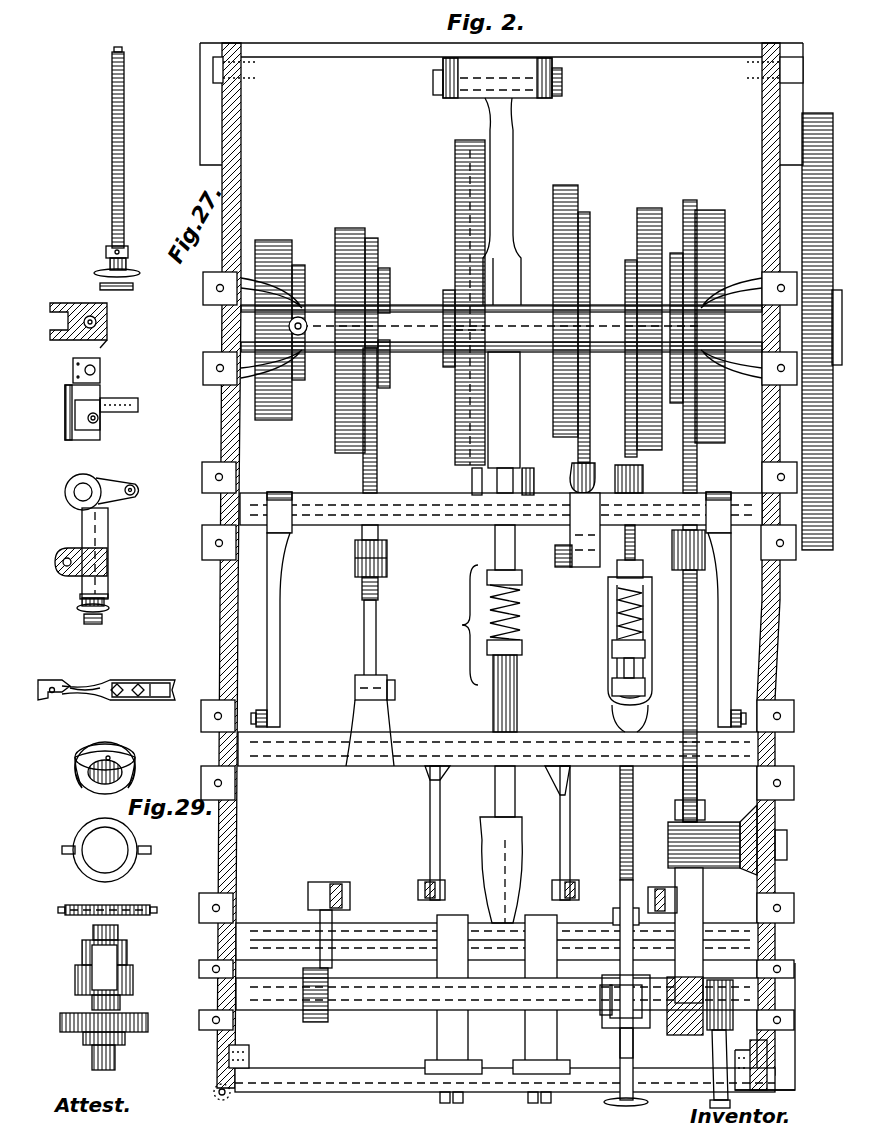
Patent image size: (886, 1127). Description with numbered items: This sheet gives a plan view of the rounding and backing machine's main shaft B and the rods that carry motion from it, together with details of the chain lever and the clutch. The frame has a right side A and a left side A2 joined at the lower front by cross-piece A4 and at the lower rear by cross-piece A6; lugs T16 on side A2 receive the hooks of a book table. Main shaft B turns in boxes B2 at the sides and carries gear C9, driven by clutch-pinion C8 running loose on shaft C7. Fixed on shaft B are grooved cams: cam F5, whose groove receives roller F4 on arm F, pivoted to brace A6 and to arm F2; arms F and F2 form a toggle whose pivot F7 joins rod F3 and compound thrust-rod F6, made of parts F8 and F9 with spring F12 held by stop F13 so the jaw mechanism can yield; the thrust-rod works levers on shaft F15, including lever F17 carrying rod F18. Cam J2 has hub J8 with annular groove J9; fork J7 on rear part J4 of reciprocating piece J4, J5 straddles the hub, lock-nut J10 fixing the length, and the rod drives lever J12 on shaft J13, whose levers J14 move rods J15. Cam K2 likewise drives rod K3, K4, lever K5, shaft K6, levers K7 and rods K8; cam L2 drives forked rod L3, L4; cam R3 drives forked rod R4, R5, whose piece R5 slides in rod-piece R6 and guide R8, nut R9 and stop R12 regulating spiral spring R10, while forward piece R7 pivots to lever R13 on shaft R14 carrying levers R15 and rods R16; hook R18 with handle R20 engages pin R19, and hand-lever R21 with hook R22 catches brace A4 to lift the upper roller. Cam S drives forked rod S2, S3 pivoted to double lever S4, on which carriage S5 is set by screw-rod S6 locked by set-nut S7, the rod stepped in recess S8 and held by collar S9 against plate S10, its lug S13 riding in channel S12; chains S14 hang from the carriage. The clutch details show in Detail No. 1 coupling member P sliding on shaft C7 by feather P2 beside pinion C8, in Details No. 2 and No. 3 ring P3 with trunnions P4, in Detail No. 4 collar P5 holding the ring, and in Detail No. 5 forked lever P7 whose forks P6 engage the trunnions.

In FIG. 2, the right side of the frame A is at (777, 628).
In FIG. 2, the left side of the frame A2 is at (238, 840).
In FIG. 2, the lower front cross-piece A4 is at (369, 1080).
In FIG. 2, the lower rear cross-piece A6 is at (326, 52).
In FIG. 2, the main shaft B is at (501, 328).
In FIG. 2, the boxes B2 is at (494, 328).
In FIG. 2, the gear C9 is at (827, 331).
In FIG. 2, the grooved cam L2 is at (273, 330).
In FIG. 2, the forked reciprocating rod L3 is at (298, 262).
In FIG. 2, the forked reciprocating rod L4 is at (303, 320).
In FIG. 2, the cam J2 is at (350, 340).
In FIG. 2, the rear part of reciprocating piece J4 is at (377, 445).
In FIG. 2, the reciprocating piece J5 is at (376, 628).
In FIG. 2, the fork J7 is at (373, 240).
In FIG. 2, the hub J8 is at (390, 375).
In FIG. 2, the annular groove J9 is at (388, 270).
In FIG. 2, the lock-nut J10 is at (387, 572).
In FIG. 2, the lever J12 is at (370, 720).
In FIG. 2, the shaft J13 is at (292, 768).
In FIG. 2, the levers J14 is at (430, 828).
In FIG. 2, the rods J15 is at (420, 883).
In FIG. 2, the arm F is at (497, 181).
In FIG. 2, the arm F2 is at (496, 458).
In FIG. 2, the rod F3 is at (530, 473).
In FIG. 2, the roller F4 is at (470, 341).
In FIG. 2, the cam F5 is at (464, 302).
In FIG. 2, the compound thrust-rod F6 is at (455, 625).
In FIG. 2, the pivot F7 is at (472, 479).
In FIG. 2, the thrust-rod portion F8 is at (515, 548).
In FIG. 2, the thrust-rod portion F9 is at (517, 690).
In FIG. 2, the spring F12 is at (520, 628).
In FIG. 2, the stop F13 is at (522, 579).
In FIG. 2, the shaft F15 is at (425, 940).
In FIG. 2, the lever F17 is at (514, 860).
In FIG. 2, the rod F18 is at (515, 798).
In FIG. 2, the grooved cam K2 is at (565, 311).
In FIG. 2, the reciprocating rod K3 is at (590, 406).
In FIG. 2, the reciprocating rod K4 is at (572, 489).
In FIG. 2, the lever K5 is at (585, 530).
In FIG. 2, the shaft K6 is at (435, 527).
In FIG. 2, the levers K7 is at (280, 572).
In FIG. 2, the rods K8 is at (261, 710).
In FIG. 2, the grooved cam R3 is at (649, 329).
In FIG. 2, the forked reciprocating rod R4 is at (628, 462).
In FIG. 2, the rod-piece R5 is at (590, 552).
In FIG. 2, the rod-piece R6 is at (614, 706).
In FIG. 2, the rod-piece R7 is at (619, 1051).
In FIG. 2, the guide R8 is at (645, 688).
In FIG. 2, the nut R9 is at (645, 648).
In FIG. 2, the spiral spring R10 is at (617, 612).
In FIG. 2, the stop R12 is at (638, 577).
In FIG. 2, the lever R13 is at (605, 1002).
In FIG. 2, the shaft R14 is at (497, 994).
In FIG. 2, the levers R15 is at (314, 1022).
In FIG. 2, the rods R16 is at (340, 871).
In FIG. 2, the hook R18 is at (606, 1020).
In FIG. 2, the pin R19 is at (697, 1026).
In FIG. 2, the handle R20 is at (634, 1055).
In FIG. 2, the hand-lever R21 is at (726, 1030).
In FIG. 2, the hook R22 is at (767, 1060).
In FIG. 2, the grooved cam S is at (710, 326).
In FIG. 2, the forked reciprocating rod S2 is at (697, 563).
In FIG. 2, the forked reciprocating rod S3 is at (697, 698).
In FIG. 2, the chains S14 is at (715, 843).
In FIG. 2, the lugs T16 is at (231, 1095).
In FIG. 27, the double lever S4 is at (68, 426).
In FIG. 27, the adjustable carriage S5 is at (78, 303).
In FIG. 27, the screw-rod S6 is at (97, 626).
In FIG. 27, the set-nut S7 is at (98, 271).
In FIG. 27, the recess S8 is at (93, 420).
In FIG. 27, the collar S9 is at (108, 250).
In FIG. 27, the plate S10 is at (100, 370).
In FIG. 27, the channel S12 is at (103, 420).
In FIG. 27, the lug S13 is at (110, 349).
In FIG. 29, the clutch side-elevation detail 1 is at (121, 996).
In FIG. 29, the trunnion-collar edge view 2 is at (118, 910).
In FIG. 29, the trunnion-collar side view 3 is at (119, 850).
In FIG. 29, the retaining-collar perspective view 4 is at (114, 768).
In FIG. 29, the forked-lever top view 5 is at (106, 681).
In FIG. 29, the coupling member P is at (92, 978).
In FIG. 29, the feather P2 is at (92, 932).
In FIG. 29, the ring P3 is at (107, 879).
In FIG. 29, the trunnions P4 is at (52, 696).
In FIG. 29, the collar P5 is at (93, 762).
In FIG. 29, the forks P6 is at (95, 694).
In FIG. 29, the forked lever P7 is at (172, 694).
In FIG. 29, the shaft C7 is at (92, 1053).
In FIG. 29, the clutch-pinion C8 is at (128, 1030).